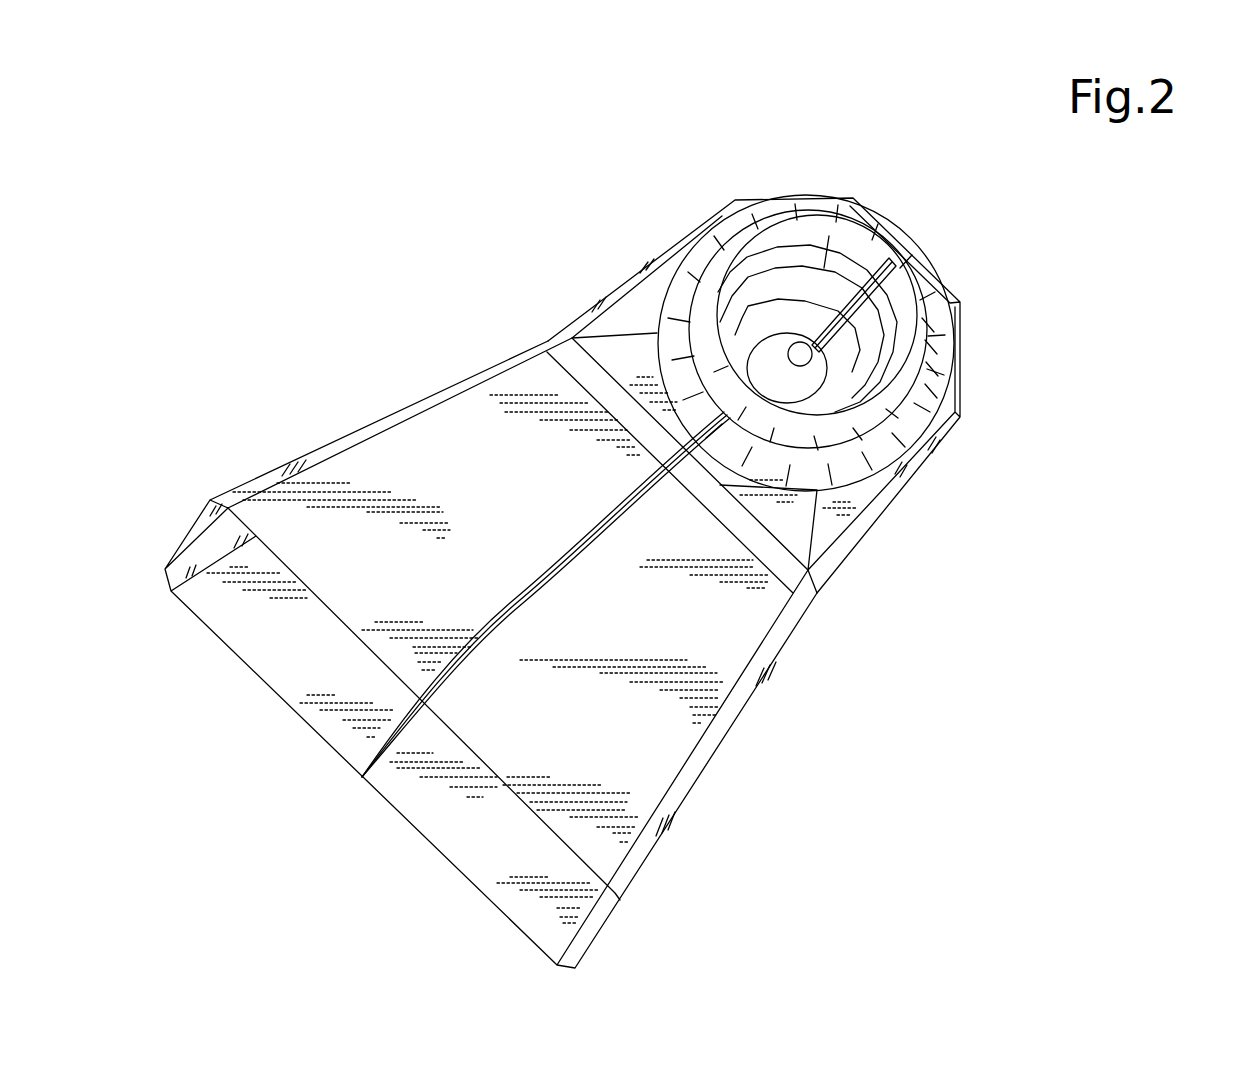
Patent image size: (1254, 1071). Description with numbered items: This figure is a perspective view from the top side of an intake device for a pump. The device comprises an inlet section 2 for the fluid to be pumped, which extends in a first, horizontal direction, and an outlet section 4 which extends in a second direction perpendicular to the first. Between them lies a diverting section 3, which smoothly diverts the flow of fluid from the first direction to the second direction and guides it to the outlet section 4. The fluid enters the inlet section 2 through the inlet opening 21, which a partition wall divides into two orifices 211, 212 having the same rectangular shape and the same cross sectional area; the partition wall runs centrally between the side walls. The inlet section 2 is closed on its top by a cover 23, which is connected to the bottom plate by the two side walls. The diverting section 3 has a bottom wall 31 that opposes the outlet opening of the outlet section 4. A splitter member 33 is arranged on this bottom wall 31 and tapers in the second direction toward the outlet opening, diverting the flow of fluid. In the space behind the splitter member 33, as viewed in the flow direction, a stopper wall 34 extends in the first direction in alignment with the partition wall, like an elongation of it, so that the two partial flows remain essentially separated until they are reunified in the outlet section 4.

The inlet section 2 is at (705, 790).
The inlet opening 21 is at (335, 757).
The orifice 211 is at (498, 838).
The orifice 212 is at (297, 642).
The cover 23 is at (522, 510).
The diverting section 3 is at (948, 466).
The bottom wall 31 is at (847, 372).
The splitter member 33 is at (770, 347).
The stopper wall 34 is at (866, 272).
The outlet section 4 is at (705, 297).